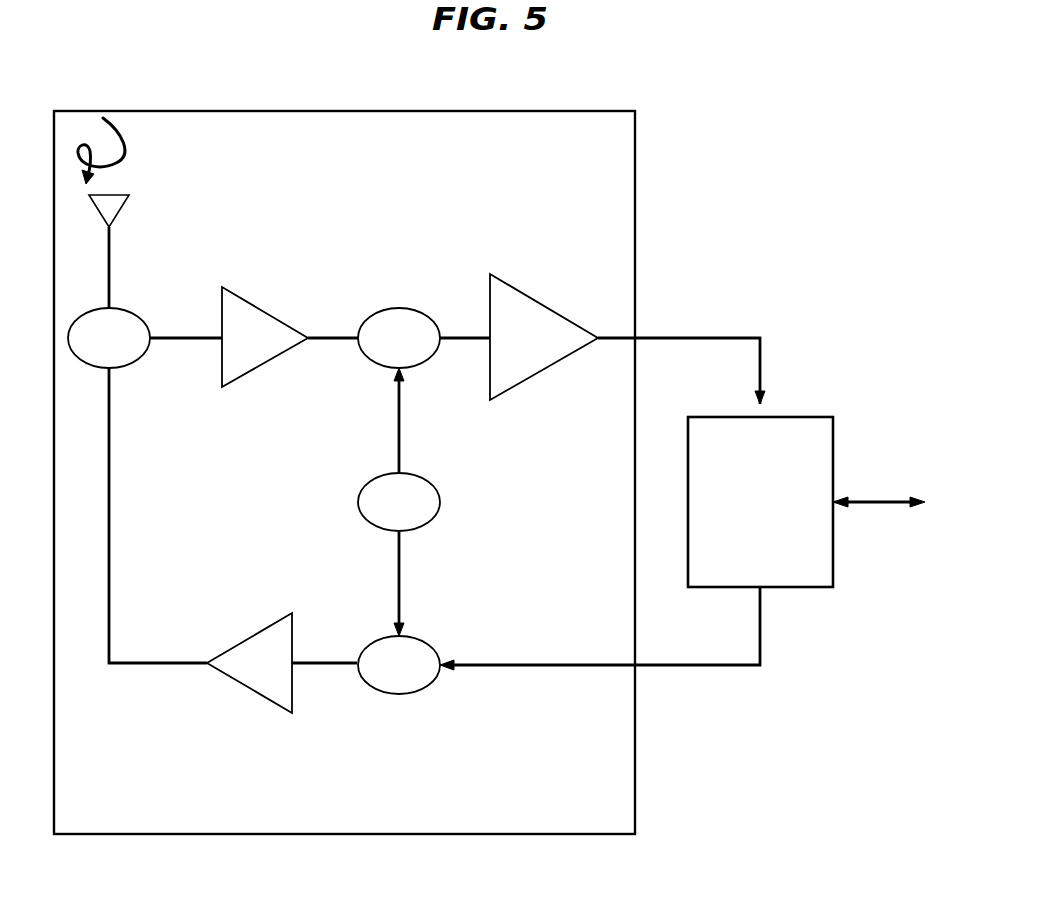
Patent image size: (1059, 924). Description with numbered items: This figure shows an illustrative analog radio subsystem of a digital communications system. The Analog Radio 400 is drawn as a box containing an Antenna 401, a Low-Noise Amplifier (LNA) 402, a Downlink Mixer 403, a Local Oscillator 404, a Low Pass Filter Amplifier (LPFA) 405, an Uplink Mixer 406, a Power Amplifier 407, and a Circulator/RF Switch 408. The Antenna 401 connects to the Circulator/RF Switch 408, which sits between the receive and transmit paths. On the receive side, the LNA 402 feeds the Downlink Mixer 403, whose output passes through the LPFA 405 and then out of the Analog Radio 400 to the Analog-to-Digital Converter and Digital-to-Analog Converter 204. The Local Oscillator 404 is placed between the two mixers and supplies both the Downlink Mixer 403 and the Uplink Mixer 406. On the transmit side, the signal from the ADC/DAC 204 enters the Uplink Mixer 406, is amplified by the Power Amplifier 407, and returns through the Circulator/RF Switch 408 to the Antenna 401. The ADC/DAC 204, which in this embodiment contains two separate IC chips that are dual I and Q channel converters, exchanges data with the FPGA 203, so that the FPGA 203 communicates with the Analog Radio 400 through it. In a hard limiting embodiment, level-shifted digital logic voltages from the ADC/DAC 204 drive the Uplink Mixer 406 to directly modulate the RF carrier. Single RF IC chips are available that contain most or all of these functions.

The Analog Radio 400 is at (577, 837).
The Antenna 401 is at (125, 200).
The Low-Noise Amplifier (LNA) 402 is at (285, 362).
The Downlink Mixer 403 is at (415, 284).
The Local Oscillator 404 is at (440, 512).
The Low Pass Filter Amplifier (LPFA) 405 is at (516, 384).
The Uplink Mixer 406 is at (392, 694).
The Power Amplifier 407 is at (213, 668).
The Circulator/RF Switch 408 is at (146, 355).
The Analog-to-Digital Converter (ADC) and Digital-to-Analog Converter (DAC) 204 is at (799, 590).
The FPGA 203 is at (879, 547).